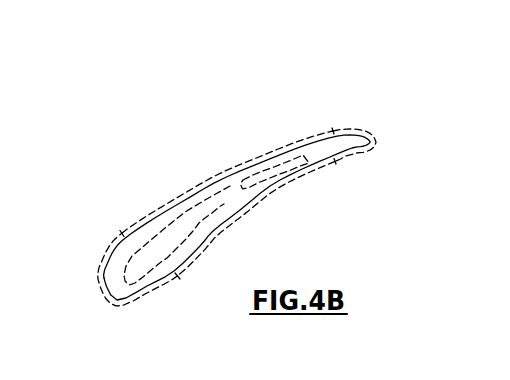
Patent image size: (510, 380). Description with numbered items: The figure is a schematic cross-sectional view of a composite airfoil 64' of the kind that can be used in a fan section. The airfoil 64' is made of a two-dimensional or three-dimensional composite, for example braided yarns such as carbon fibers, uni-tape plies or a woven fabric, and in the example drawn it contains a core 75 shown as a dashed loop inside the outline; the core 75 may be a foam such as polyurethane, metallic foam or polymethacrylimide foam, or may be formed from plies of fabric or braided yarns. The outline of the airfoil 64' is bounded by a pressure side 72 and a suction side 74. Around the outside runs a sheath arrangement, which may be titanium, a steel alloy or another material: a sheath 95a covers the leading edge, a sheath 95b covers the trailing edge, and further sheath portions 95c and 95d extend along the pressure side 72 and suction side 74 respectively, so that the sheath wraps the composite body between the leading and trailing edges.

The composite airfoil 64' is at (211, 188).
The pressure side 72 is at (208, 235).
The suction side 74 is at (187, 192).
The core 75 is at (160, 230).
The sheath 95a is at (97, 283).
The sheath 95b is at (355, 130).
The sheath 95c is at (239, 214).
The sheath 95d is at (232, 165).